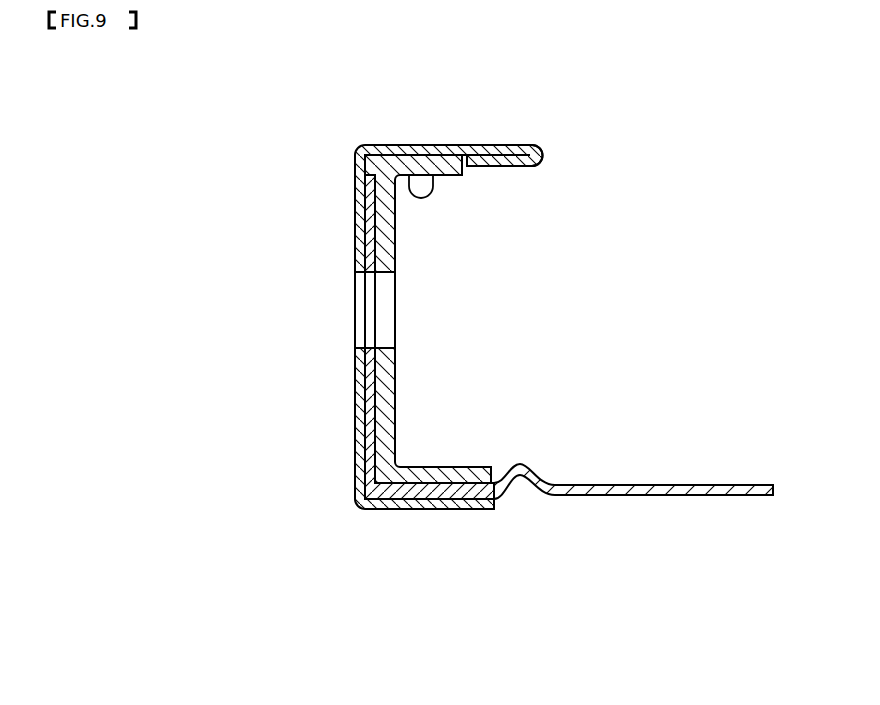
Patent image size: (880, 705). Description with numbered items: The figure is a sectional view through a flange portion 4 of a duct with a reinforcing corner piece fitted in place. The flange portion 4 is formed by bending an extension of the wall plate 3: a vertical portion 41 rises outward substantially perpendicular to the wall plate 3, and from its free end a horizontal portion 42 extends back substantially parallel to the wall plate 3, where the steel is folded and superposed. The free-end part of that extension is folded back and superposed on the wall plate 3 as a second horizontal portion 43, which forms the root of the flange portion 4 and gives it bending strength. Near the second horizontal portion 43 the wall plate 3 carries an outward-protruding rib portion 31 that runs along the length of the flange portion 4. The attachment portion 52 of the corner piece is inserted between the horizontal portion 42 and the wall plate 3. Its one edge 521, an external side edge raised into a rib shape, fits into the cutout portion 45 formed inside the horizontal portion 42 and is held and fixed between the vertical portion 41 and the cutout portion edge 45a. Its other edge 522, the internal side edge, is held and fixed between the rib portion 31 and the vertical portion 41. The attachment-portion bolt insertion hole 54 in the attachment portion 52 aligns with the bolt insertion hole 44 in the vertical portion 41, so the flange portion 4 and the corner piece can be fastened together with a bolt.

The wall plate 3 is at (687, 485).
The rib portion 31 is at (536, 470).
The flange portion 4 is at (293, 140).
The vertical portion 41 is at (356, 197).
The horizontal portion 42 is at (505, 146).
The second horizontal portion 43 is at (431, 509).
The bolt insertion hole 44 is at (359, 350).
The cutout portion 45 is at (409, 176).
The cutout portion edge 45a is at (445, 152).
The attachment portion 52 is at (396, 400).
The one edge 521 is at (455, 176).
The other edge 522 is at (455, 467).
The attachment-portion bolt insertion hole 54 is at (390, 350).